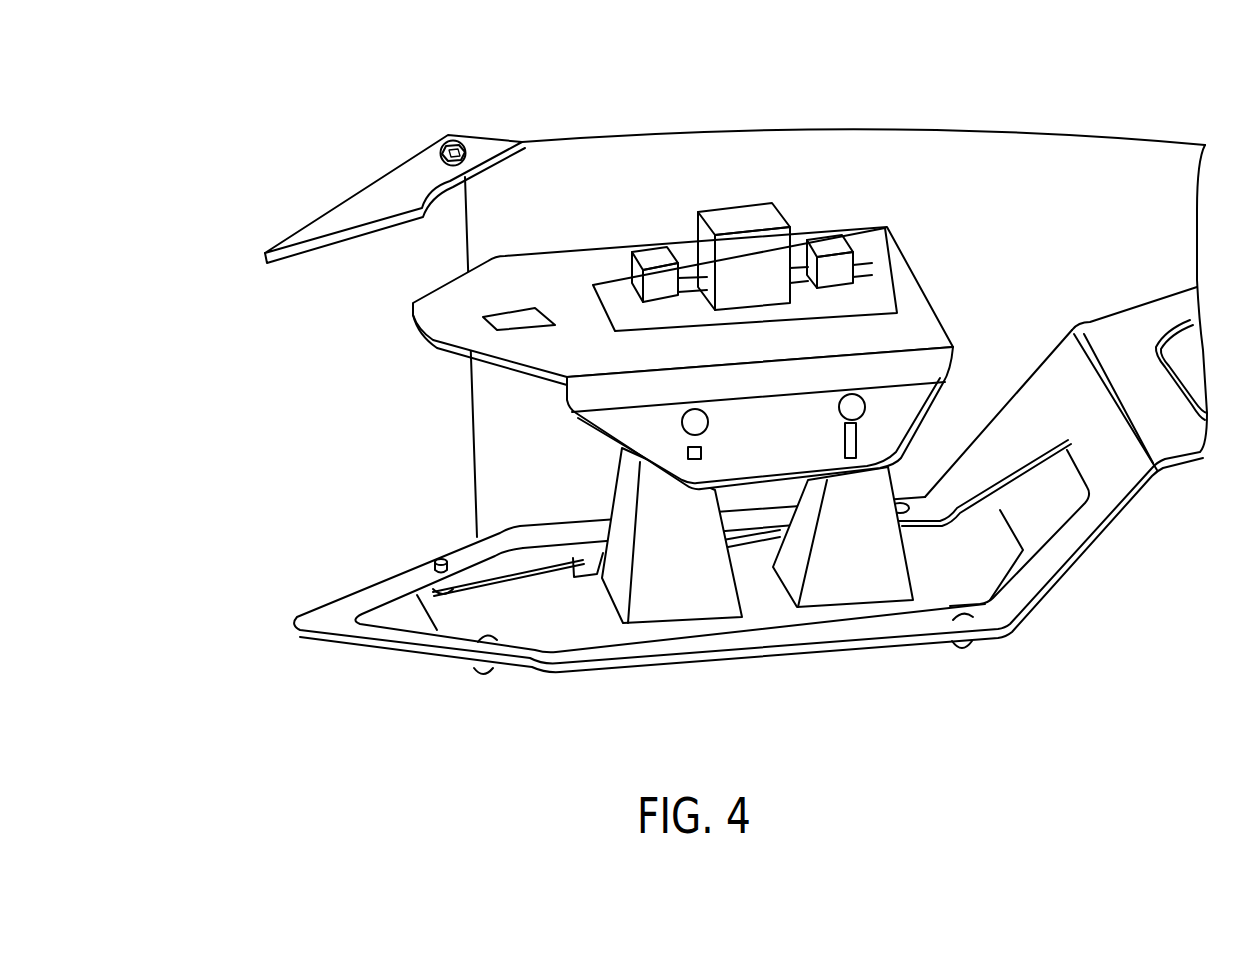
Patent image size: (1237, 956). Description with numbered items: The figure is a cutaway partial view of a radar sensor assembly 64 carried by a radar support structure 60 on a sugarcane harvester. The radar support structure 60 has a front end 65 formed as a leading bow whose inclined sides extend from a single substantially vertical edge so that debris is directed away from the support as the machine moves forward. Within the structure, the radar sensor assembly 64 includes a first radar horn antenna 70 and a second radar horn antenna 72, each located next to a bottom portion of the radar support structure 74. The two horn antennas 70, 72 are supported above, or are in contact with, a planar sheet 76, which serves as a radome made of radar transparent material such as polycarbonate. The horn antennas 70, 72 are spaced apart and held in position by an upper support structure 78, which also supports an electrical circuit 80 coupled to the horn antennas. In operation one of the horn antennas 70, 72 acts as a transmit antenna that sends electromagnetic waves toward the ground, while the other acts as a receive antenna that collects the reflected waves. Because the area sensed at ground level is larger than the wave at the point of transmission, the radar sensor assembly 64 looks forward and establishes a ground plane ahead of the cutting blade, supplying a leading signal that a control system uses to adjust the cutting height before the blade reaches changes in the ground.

The radar support structure 60 is at (812, 121).
The radar sensor assembly 64 is at (684, 632).
The front end 65 is at (589, 443).
The first radar horn antenna 70 is at (640, 597).
The second radar horn antenna 72 is at (827, 612).
The radar support structure bottom portion 74 is at (540, 673).
The planar sheet 76 is at (767, 615).
The upper support structure 78 is at (900, 295).
The electrical circuit 80 is at (655, 257).